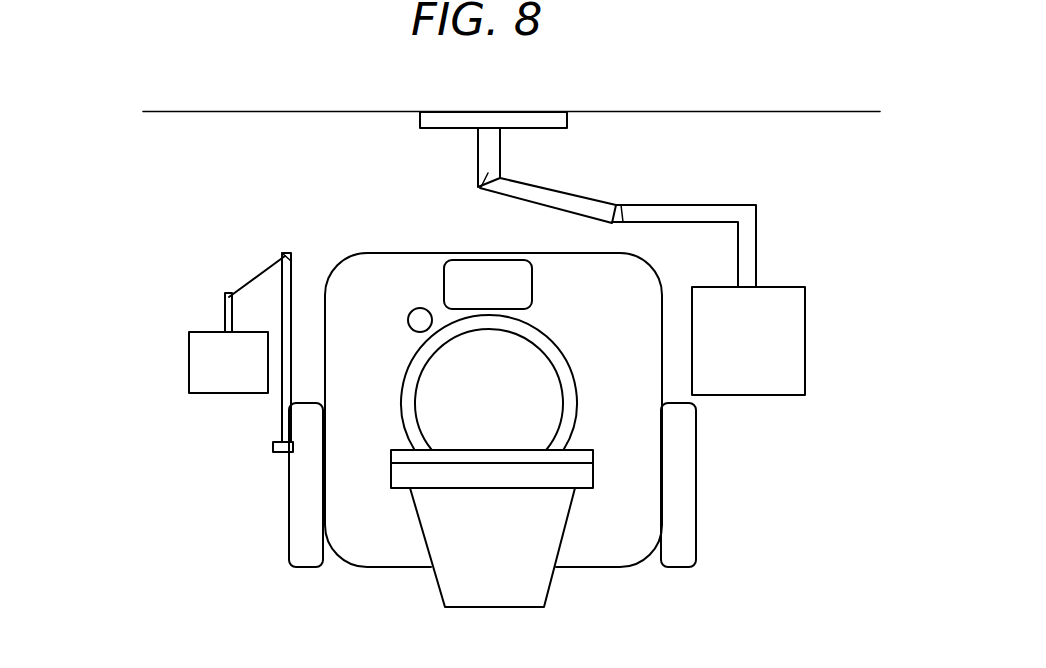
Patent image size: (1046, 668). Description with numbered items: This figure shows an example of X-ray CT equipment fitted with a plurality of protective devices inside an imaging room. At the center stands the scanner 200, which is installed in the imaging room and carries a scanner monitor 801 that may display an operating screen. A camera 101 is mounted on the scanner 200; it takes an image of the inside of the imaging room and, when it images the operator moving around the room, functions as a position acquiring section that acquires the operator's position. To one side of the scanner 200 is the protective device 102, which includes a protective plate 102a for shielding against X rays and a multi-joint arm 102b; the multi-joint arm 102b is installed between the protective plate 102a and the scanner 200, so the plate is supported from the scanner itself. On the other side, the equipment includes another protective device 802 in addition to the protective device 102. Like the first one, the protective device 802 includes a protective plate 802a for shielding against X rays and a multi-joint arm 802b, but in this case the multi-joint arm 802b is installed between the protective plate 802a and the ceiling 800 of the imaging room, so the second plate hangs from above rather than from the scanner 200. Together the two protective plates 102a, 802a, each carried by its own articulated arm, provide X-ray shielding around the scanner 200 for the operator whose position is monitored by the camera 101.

The ceiling 800 is at (742, 112).
The scanner monitor 801 is at (532, 283).
The protective device 802 is at (691, 253).
The protective plate 802a is at (793, 341).
The multi-joint arm 802b is at (757, 252).
The protective device 102 is at (168, 352).
The protective plate 102a is at (185, 362).
The multi-joint arm 102b is at (225, 318).
The camera 101 is at (411, 314).
The scanner 200 is at (455, 252).